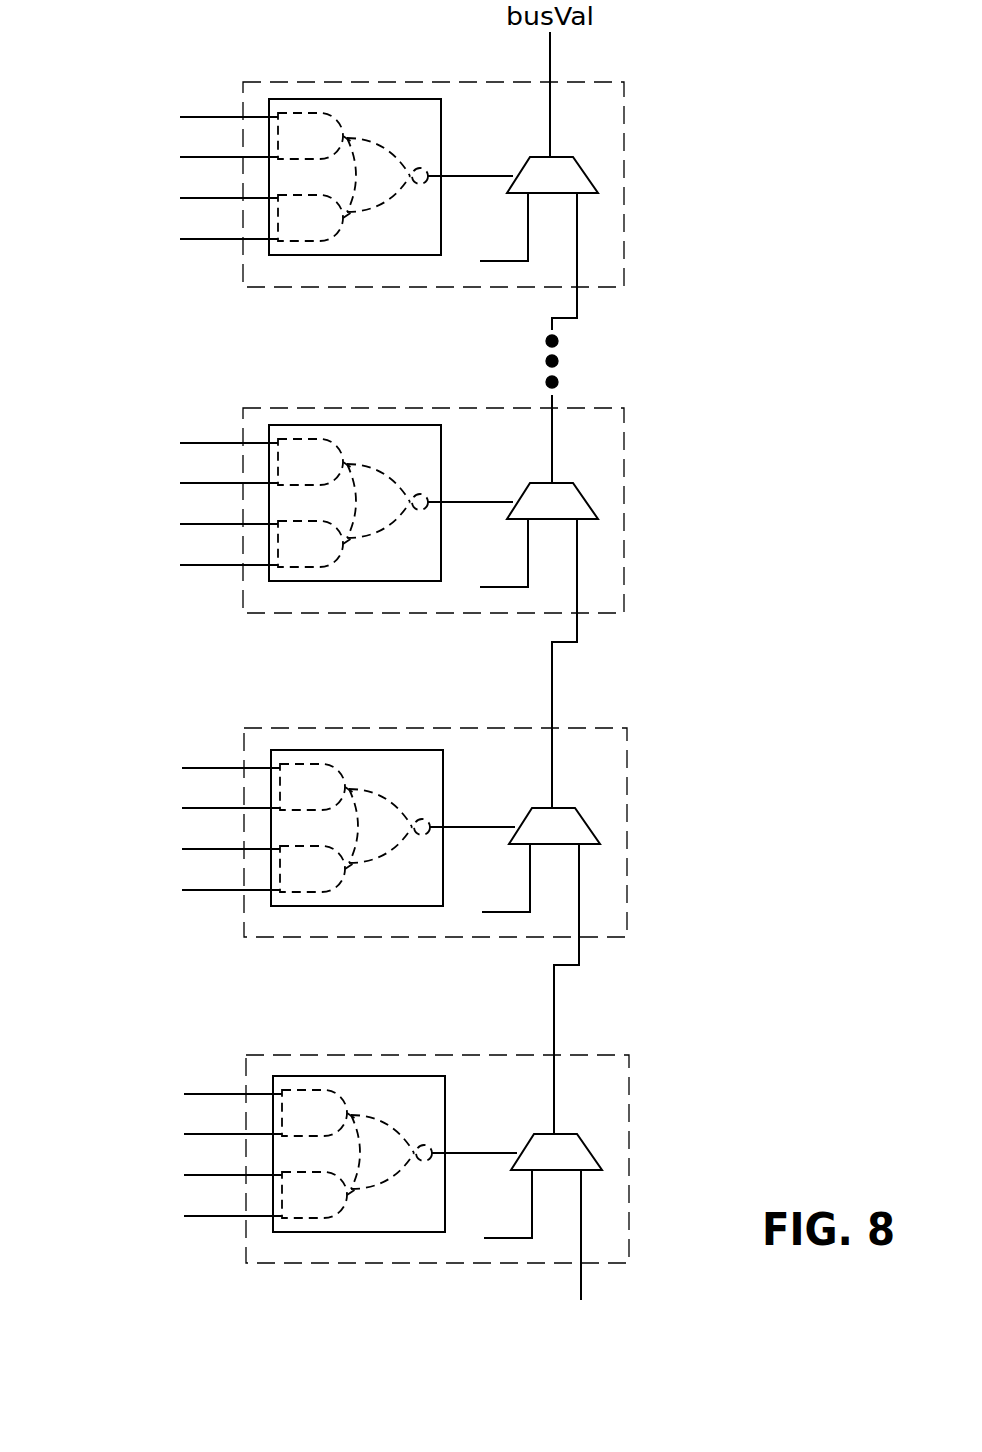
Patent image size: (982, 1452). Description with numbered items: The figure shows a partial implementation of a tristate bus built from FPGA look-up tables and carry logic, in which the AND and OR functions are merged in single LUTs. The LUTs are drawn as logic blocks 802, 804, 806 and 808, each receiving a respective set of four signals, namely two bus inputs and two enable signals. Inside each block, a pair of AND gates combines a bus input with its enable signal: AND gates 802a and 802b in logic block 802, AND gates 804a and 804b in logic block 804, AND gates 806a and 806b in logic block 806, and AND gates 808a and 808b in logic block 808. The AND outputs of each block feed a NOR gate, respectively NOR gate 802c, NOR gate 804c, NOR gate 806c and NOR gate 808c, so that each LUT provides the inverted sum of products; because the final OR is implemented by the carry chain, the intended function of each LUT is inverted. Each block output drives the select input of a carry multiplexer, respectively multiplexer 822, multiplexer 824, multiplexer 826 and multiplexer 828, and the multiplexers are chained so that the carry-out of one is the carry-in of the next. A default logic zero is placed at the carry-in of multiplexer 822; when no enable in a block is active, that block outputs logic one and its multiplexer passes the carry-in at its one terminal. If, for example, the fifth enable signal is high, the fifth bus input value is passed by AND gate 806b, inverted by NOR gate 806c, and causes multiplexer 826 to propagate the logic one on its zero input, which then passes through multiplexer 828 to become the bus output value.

The logic block 802 is at (361, 1159).
The AND gate 802a is at (319, 1113).
The AND gate 802b is at (319, 1195).
The NOR gate 802c is at (391, 1152).
The logic block 804 is at (359, 832).
The AND gate 804a is at (317, 787).
The AND gate 804b is at (317, 869).
The NOR gate 804c is at (389, 826).
The logic block 806 is at (356, 510).
The AND gate 806a is at (315, 462).
The AND gate 806b is at (315, 544).
The NOR gate 806c is at (387, 501).
The logic block 808 is at (330, 184).
The AND gate 808a is at (315, 136).
The AND gate 808b is at (315, 218).
The NOR gate 808c is at (387, 175).
The multiplexer 822 is at (612, 1135).
The multiplexer 824 is at (610, 809).
The multiplexer 826 is at (608, 484).
The multiplexer 828 is at (608, 158).